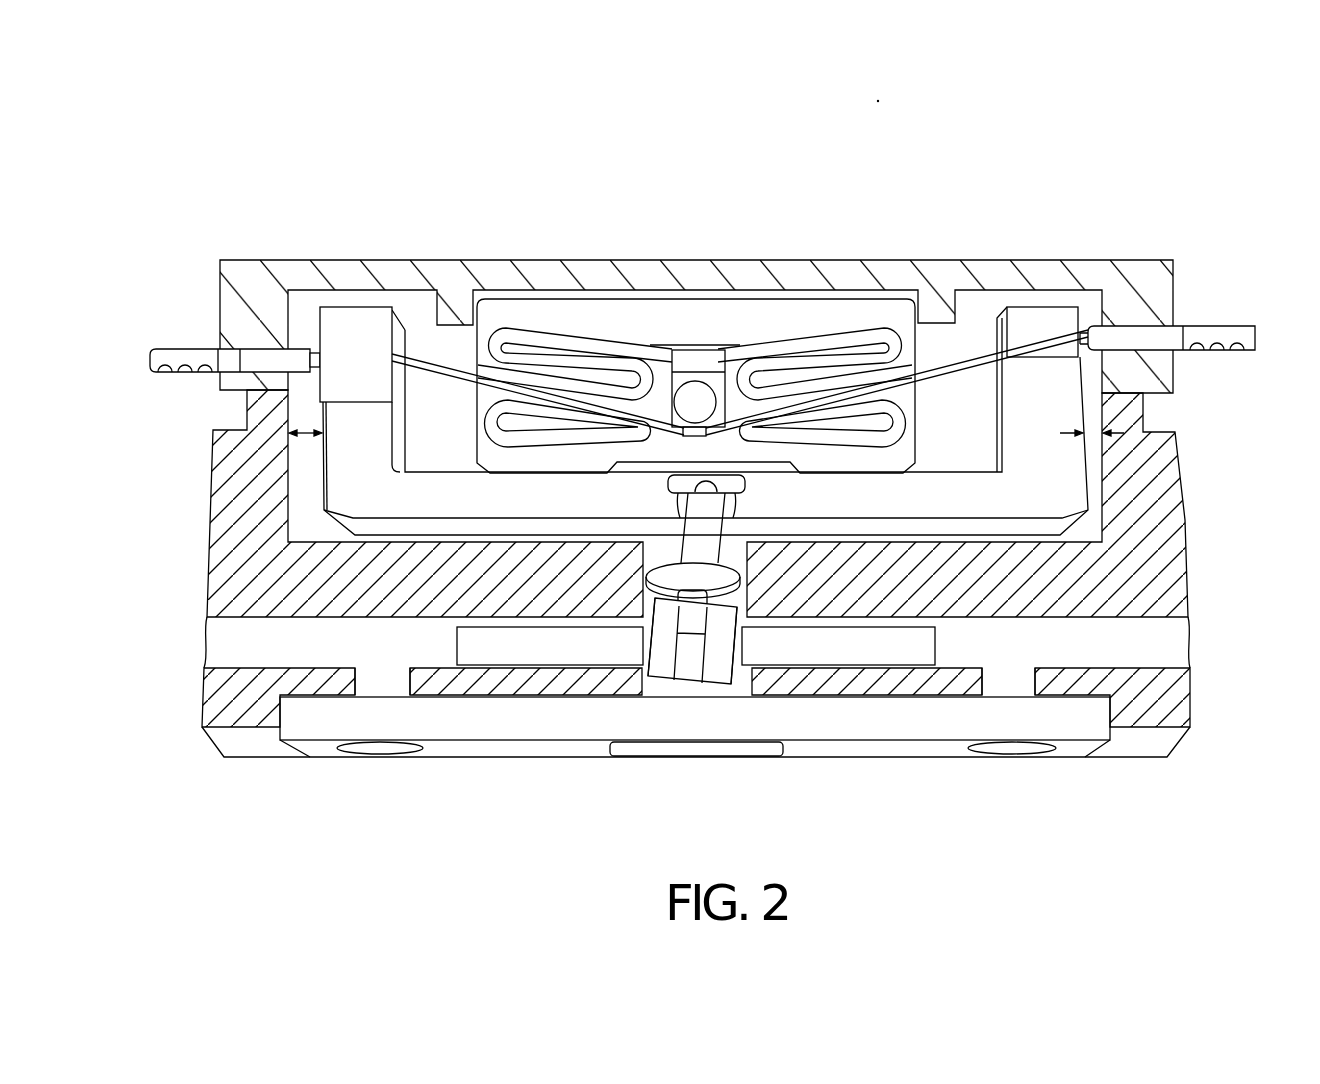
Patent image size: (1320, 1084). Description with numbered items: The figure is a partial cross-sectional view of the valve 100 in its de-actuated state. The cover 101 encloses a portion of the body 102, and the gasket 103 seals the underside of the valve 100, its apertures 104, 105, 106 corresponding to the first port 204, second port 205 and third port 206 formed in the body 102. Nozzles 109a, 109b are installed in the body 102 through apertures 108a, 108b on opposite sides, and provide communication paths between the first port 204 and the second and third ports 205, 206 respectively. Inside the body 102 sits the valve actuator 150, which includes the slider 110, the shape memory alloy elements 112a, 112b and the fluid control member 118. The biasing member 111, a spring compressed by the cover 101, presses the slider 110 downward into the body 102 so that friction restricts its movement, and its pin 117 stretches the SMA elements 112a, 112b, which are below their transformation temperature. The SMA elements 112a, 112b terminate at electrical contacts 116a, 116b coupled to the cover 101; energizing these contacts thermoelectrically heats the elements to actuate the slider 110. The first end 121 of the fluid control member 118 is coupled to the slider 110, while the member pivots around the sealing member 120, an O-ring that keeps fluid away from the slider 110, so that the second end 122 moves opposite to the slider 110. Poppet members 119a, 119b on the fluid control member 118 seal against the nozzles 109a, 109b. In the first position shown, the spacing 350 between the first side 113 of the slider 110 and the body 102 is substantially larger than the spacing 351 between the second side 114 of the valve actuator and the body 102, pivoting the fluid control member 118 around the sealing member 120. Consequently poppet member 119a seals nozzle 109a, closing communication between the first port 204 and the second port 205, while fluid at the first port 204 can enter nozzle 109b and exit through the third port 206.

The valve 100 is at (1052, 160).
The cover 101 is at (560, 262).
The body 102 is at (1170, 528).
The gasket 103 is at (1113, 728).
The aperture 104 is at (713, 757).
The aperture 105 is at (378, 757).
The aperture 106 is at (1012, 757).
The aperture 108a is at (217, 640).
The second aperture 108b is at (1172, 647).
The first nozzle 109a is at (487, 640).
The second nozzle 109b is at (910, 636).
The slider 110 is at (1043, 510).
The biasing member 111 is at (895, 313).
The shape memory alloy element 112a is at (957, 377).
The shape memory alloy element 112b is at (433, 400).
The first side of the slider 113 is at (353, 330).
The second side of the valve actuator 114 is at (1042, 328).
The electrical contact 116a is at (1150, 335).
The electrical contact 116b is at (256, 352).
The pin 117 is at (698, 412).
The fluid control member 118 is at (697, 675).
The poppet member 119a is at (667, 670).
The poppet member 119b is at (716, 705).
The sealing member 120 is at (652, 603).
The first end of the fluid control member 121 is at (740, 545).
The second end of the fluid control member 122 is at (733, 703).
The valve actuator 150 is at (295, 488).
The first port 204 is at (640, 698).
The second port 205 is at (377, 685).
The third port 206 is at (1017, 685).
The spacing 350 is at (307, 436).
The spacing 351 is at (1093, 437).